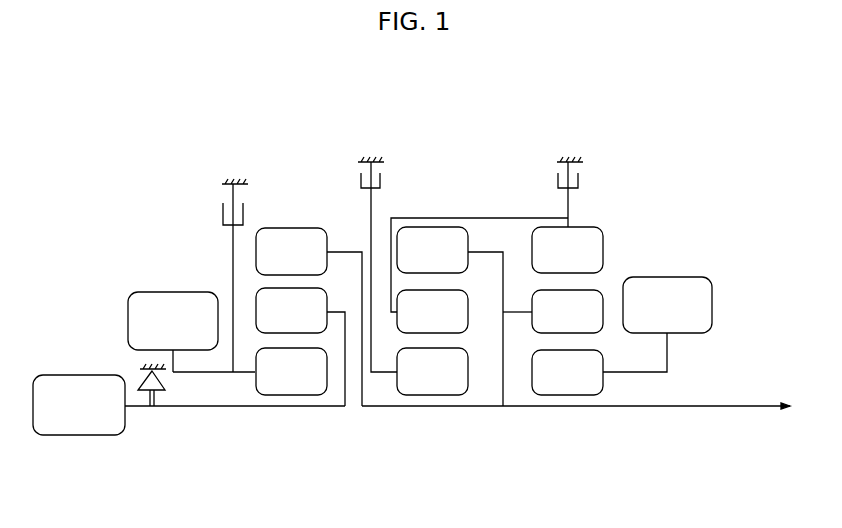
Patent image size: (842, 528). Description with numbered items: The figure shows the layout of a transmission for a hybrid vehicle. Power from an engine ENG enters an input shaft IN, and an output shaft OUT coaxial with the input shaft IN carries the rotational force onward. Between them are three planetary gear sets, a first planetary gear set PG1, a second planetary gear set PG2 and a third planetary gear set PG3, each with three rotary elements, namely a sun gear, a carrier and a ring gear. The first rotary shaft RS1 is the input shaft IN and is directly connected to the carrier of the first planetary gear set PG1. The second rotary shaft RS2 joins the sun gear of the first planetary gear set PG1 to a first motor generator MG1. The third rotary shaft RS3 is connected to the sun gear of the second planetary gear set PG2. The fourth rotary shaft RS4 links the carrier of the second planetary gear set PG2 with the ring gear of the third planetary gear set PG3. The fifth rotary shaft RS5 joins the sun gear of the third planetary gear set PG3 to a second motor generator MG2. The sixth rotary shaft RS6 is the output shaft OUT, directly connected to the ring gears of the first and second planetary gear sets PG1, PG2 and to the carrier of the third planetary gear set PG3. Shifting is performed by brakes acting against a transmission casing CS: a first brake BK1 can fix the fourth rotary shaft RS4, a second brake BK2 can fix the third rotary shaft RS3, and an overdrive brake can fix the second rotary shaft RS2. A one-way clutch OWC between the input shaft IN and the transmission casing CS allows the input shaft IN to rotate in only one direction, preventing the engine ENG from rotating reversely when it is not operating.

The engine ENG is at (79, 405).
The input shaft IN is at (190, 407).
The output shaft OUT is at (772, 404).
The one-way clutch OWC is at (150, 407).
The transmission casing CS is at (222, 185).
The first brake BK1 is at (580, 185).
The second brake BK2 is at (356, 178).
The first motor generator MG1 is at (173, 332).
The second motor generator MG2 is at (667, 305).
The first planetary gear set PG1 is at (292, 204).
The second planetary gear set PG2 is at (428, 407).
The third planetary gear set PG3 is at (557, 407).
The first rotary shaft RS1 is at (245, 407).
The second rotary shaft RS2 is at (249, 374).
The third rotary shaft RS3 is at (372, 212).
The fourth rotary shaft RS4 is at (510, 218).
The fifth rotary shaft RS5 is at (647, 372).
The sixth rotary shaft RS6 is at (645, 407).